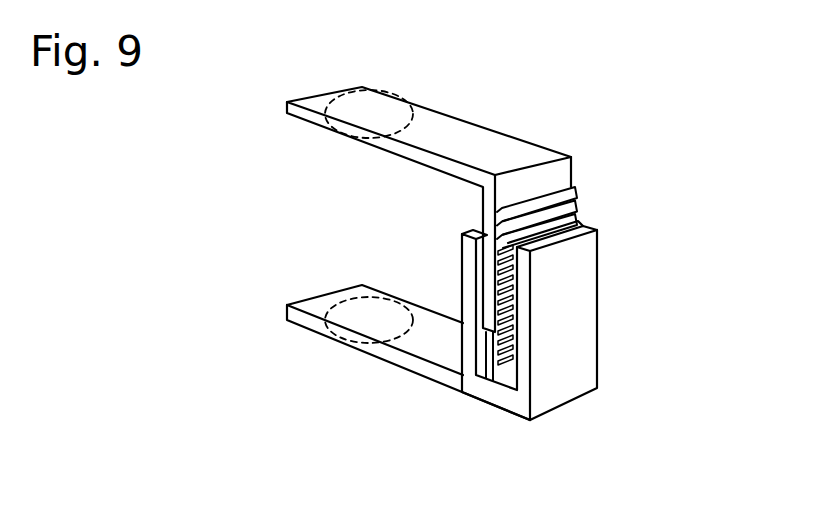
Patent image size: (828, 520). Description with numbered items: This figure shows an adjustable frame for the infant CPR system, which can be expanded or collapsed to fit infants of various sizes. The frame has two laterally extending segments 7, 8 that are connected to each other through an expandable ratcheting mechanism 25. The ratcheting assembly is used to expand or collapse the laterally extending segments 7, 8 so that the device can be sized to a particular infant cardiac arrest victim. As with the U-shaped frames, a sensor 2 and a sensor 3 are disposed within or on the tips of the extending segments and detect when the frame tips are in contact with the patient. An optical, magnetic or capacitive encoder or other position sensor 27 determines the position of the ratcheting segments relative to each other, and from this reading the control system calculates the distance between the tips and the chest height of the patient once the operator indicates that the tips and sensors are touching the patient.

The sensor 2 is at (347, 121).
The sensor 3 is at (330, 334).
The laterally extending segment 7 is at (442, 109).
The laterally extending segment 8 is at (363, 348).
The expandable ratcheting mechanism 25 is at (622, 222).
The position sensor 27 is at (481, 372).